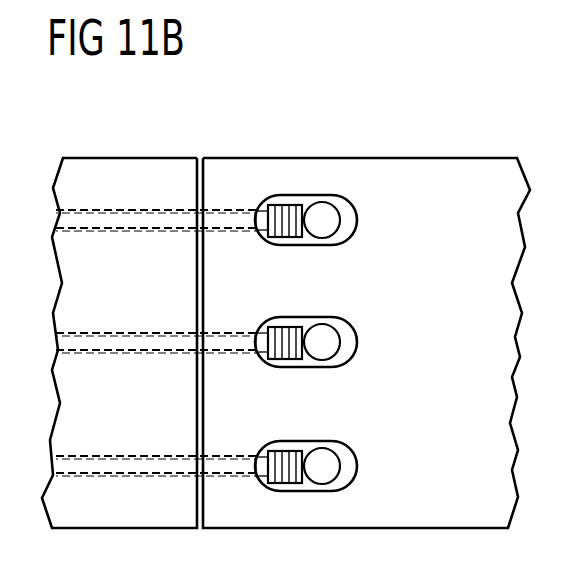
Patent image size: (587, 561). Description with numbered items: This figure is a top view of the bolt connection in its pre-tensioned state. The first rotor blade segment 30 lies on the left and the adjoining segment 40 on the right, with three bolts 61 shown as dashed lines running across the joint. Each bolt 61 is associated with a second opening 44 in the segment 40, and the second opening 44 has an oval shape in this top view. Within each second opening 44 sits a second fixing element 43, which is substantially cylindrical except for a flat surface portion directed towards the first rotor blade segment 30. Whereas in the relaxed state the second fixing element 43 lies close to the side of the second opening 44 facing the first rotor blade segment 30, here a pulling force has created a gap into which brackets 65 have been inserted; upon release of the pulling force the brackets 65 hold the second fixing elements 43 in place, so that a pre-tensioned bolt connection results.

The first rotor blade segment 30 is at (138, 170).
The second circuit board 40 is at (444, 172).
The bolt 61 is at (137, 228).
The second opening 44 is at (348, 222).
The bracket 65 is at (288, 226).
The second fixing element 43 is at (320, 230).